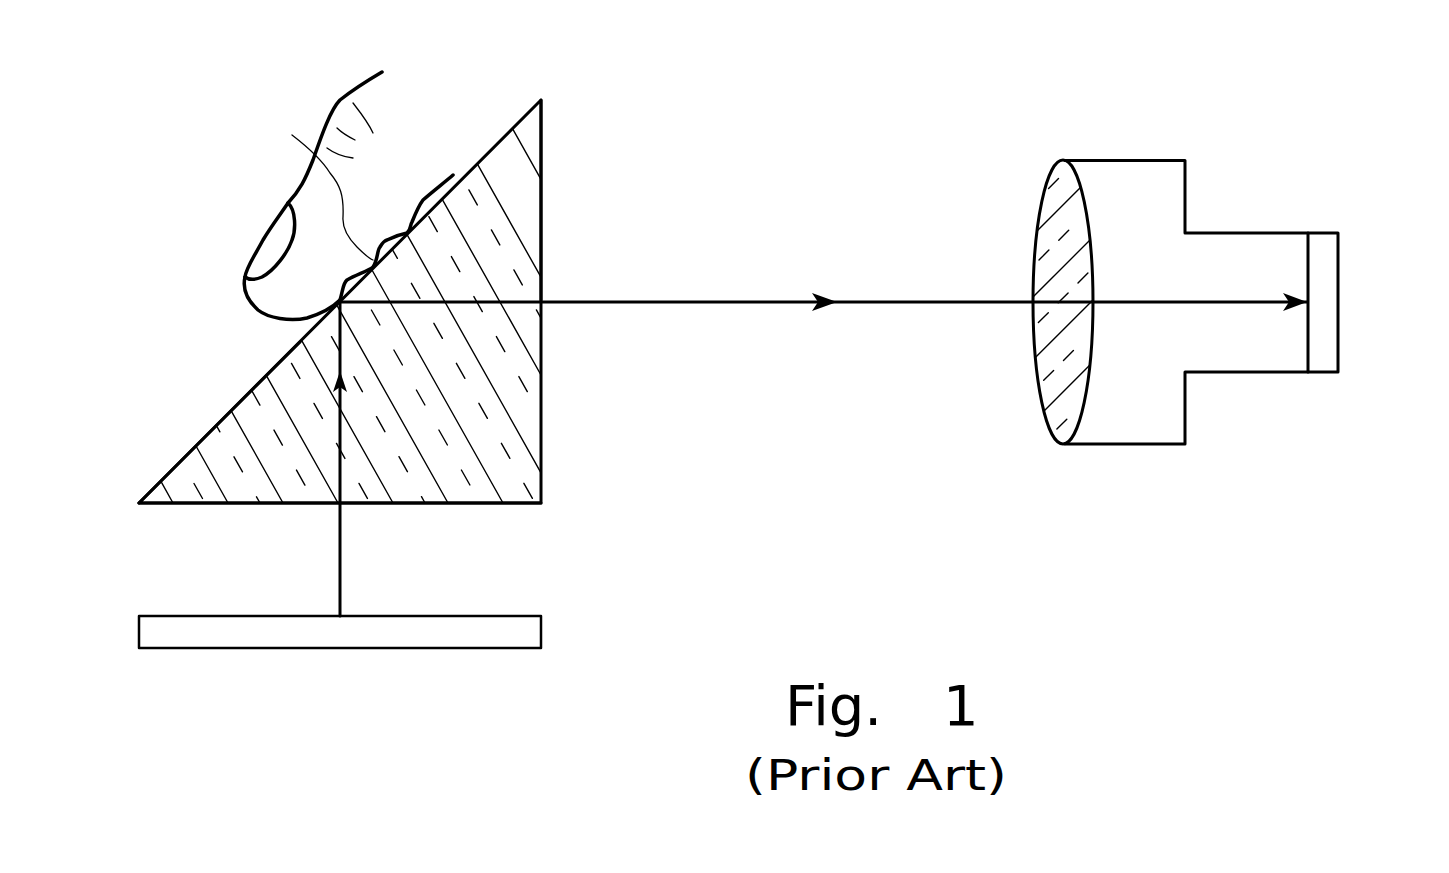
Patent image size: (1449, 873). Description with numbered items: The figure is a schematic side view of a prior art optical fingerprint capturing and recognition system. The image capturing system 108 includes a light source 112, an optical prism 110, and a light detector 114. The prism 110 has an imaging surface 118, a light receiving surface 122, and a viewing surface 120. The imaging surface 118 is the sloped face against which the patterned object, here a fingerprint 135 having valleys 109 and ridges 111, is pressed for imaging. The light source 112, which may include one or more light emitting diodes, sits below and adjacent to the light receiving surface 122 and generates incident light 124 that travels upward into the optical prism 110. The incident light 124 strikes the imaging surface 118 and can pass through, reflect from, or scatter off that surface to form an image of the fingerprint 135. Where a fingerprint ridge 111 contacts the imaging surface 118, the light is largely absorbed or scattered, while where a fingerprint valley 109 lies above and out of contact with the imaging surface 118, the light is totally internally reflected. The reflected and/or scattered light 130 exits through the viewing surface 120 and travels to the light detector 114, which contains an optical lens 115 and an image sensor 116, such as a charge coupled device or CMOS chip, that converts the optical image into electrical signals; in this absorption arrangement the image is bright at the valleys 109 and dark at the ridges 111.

The image capturing system 108 is at (859, 143).
The valleys 109 is at (347, 278).
The optical prism 110 is at (515, 396).
The ridges 111 is at (319, 181).
The light source 112 is at (293, 649).
The light detector 114 is at (1138, 446).
The optical lens 115 is at (1043, 235).
The image sensor 116 is at (1338, 287).
The imaging surface 118 is at (217, 418).
The viewing surface 120 is at (543, 197).
The light receiving surface 122 is at (472, 507).
The incident light 124 is at (338, 568).
The reflected and/or scattered light 130 is at (723, 302).
The fingerprint 135 is at (335, 241).